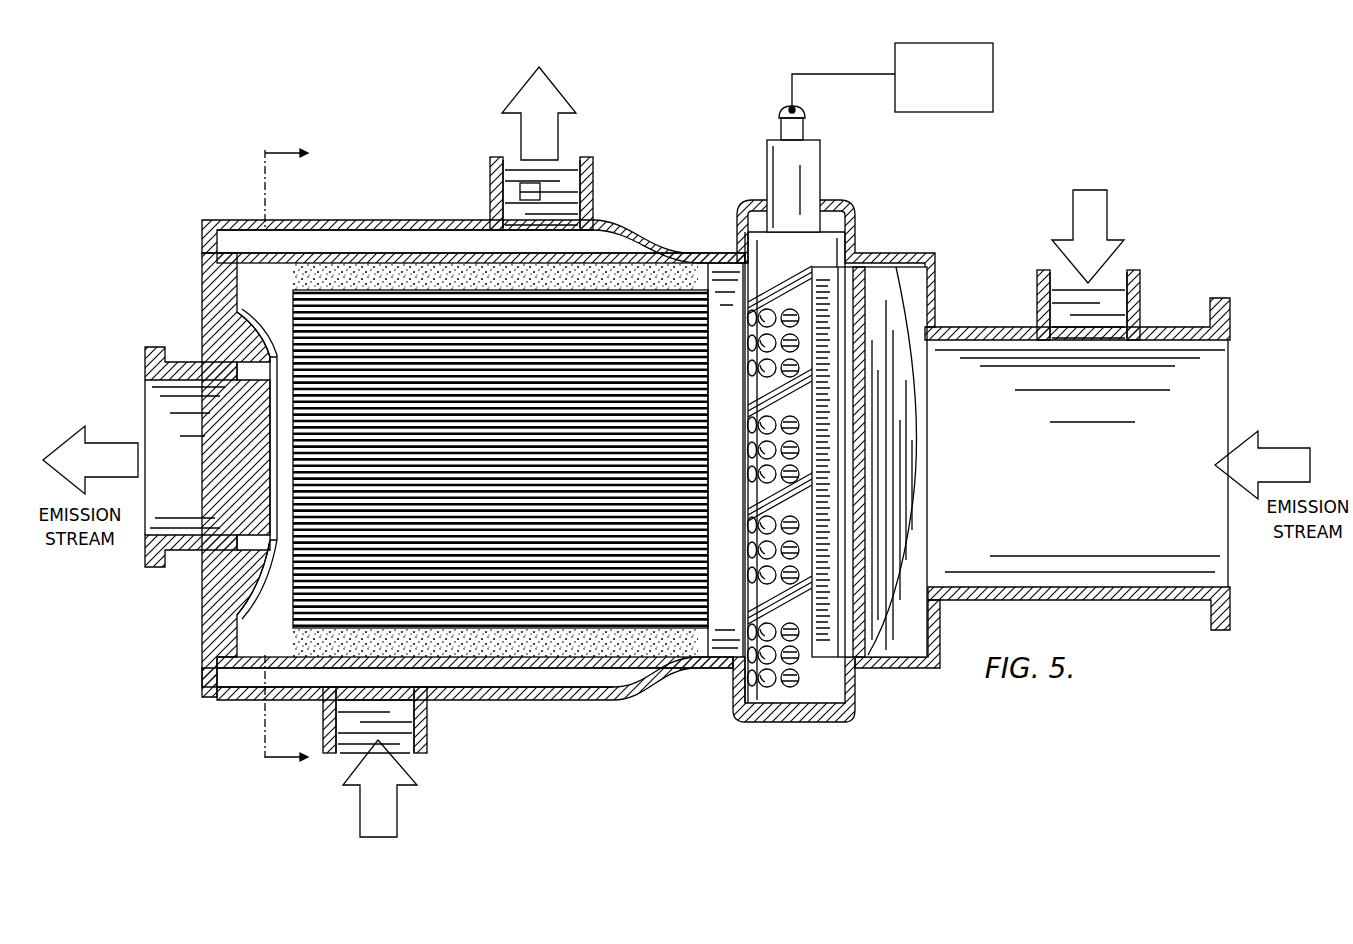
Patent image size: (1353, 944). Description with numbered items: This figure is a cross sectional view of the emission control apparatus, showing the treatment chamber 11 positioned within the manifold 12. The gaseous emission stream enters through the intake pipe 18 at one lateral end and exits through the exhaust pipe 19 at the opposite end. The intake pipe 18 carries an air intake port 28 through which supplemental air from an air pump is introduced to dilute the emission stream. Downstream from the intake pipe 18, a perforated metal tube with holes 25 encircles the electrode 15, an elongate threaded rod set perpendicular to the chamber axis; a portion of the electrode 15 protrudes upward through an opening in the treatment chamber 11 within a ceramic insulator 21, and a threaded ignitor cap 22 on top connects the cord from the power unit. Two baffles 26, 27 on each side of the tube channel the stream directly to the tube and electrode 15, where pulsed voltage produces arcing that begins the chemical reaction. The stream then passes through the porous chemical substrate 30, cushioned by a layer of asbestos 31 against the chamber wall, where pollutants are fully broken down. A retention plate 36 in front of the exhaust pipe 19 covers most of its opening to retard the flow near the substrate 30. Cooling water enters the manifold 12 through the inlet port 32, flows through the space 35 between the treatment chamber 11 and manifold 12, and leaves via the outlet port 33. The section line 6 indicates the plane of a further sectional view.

The section line 6- 6 is at (274, 458).
The treatment chamber 11 is at (452, 222).
The manifold 12 is at (328, 222).
The electrode 15 is at (832, 345).
The intake pipe 18 is at (1180, 325).
The exhaust pipe 19 is at (143, 367).
The ceramic insulator 21 is at (803, 172).
The threaded ignitor cap 22 is at (780, 127).
The holes 25 is at (744, 590).
The baffle 26 is at (855, 700).
The baffle 27 is at (958, 327).
The air intake port 28 is at (1160, 307).
The porous chemical substrate 30 is at (237, 580).
The layer of asbestos 31 is at (290, 637).
The inlet port 32 is at (395, 720).
The outlet port 33 is at (565, 198).
The space 35 is at (388, 222).
The retention plate 36 is at (265, 452).